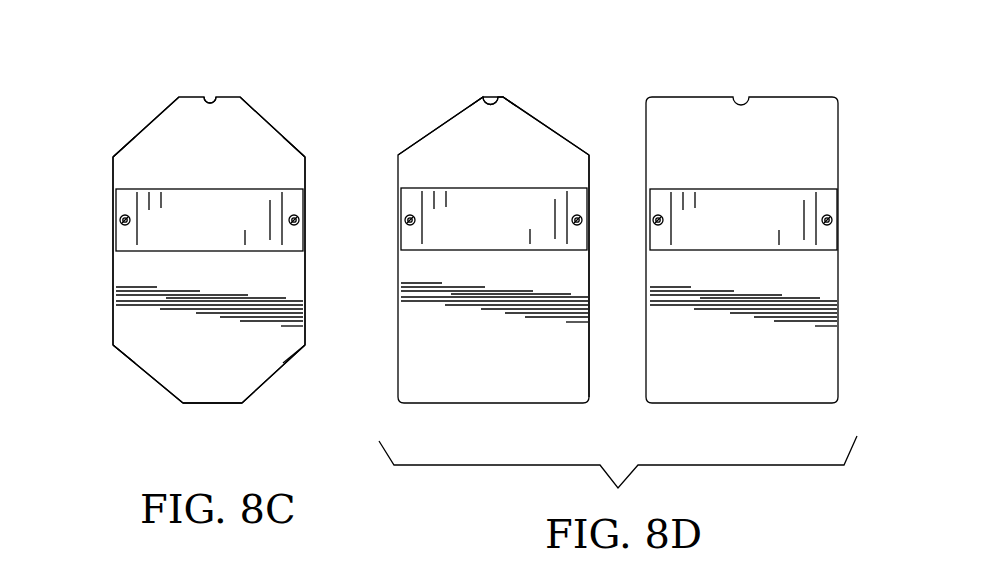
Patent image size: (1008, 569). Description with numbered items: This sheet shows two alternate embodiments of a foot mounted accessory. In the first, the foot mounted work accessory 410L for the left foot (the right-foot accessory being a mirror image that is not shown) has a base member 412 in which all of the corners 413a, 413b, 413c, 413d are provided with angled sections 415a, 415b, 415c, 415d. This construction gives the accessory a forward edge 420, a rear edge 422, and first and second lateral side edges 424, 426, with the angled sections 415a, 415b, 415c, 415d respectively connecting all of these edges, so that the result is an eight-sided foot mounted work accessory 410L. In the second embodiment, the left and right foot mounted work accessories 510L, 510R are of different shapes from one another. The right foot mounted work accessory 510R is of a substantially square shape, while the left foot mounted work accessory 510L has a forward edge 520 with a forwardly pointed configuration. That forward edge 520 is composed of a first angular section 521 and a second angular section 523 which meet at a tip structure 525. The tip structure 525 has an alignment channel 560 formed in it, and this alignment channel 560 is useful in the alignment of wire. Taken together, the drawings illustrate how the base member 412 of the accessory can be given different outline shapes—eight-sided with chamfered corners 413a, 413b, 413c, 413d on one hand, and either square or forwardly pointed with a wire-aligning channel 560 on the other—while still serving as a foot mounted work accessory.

In FIG. 8C, the foot mounted work accessory 410L is at (132, 93).
In FIG. 8C, the forward edge 420 is at (225, 97).
In FIG. 8C, the angled section 415a is at (248, 100).
In FIG. 8C, the angled section 415b is at (173, 100).
In FIG. 8C, the angled section 415c is at (248, 402).
In FIG. 8C, the angled section 415d is at (150, 378).
In FIG. 8C, the corner 413a is at (288, 138).
In FIG. 8C, the corner 413b is at (128, 143).
In FIG. 8C, the corner 413c is at (280, 368).
In FIG. 8C, the corner 413d is at (125, 353).
In FIG. 8C, the base member 412 is at (130, 173).
In FIG. 8C, the first lateral side edge 424 is at (117, 287).
In FIG. 8C, the second lateral side edge 426 is at (308, 278).
In FIG. 8C, the rear edge 422 is at (187, 403).
In FIG. 8D, the left foot mounted work accessory 510L is at (423, 125).
In FIG. 8D, the right foot mounted work accessory 510R is at (757, 93).
In FIG. 8D, the forward edge 520 is at (468, 100).
In FIG. 8D, the first angular section 521 is at (443, 120).
In FIG. 8D, the second angular section 523 is at (552, 125).
In FIG. 8D, the tip structure 525 is at (505, 90).
In FIG. 8D, the alignment channel 560 is at (492, 88).